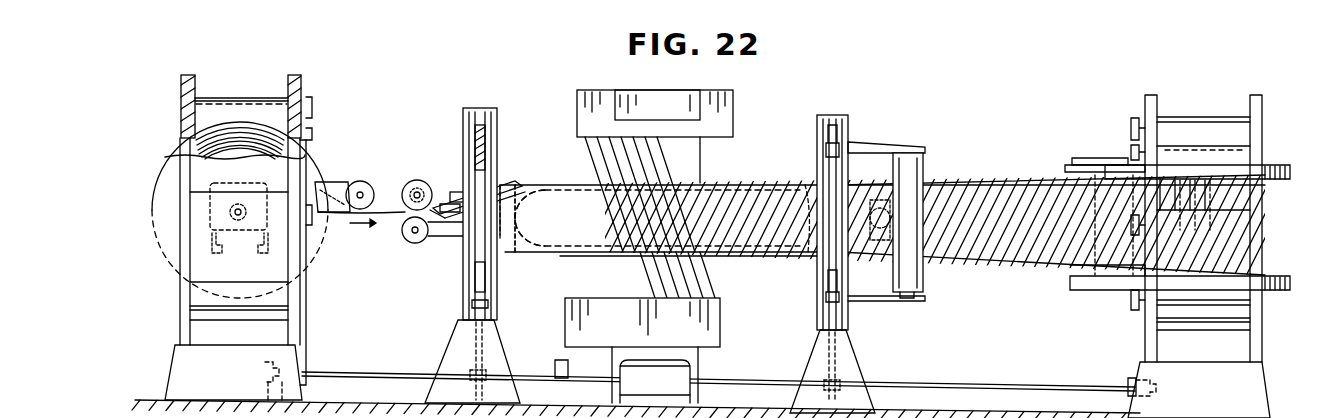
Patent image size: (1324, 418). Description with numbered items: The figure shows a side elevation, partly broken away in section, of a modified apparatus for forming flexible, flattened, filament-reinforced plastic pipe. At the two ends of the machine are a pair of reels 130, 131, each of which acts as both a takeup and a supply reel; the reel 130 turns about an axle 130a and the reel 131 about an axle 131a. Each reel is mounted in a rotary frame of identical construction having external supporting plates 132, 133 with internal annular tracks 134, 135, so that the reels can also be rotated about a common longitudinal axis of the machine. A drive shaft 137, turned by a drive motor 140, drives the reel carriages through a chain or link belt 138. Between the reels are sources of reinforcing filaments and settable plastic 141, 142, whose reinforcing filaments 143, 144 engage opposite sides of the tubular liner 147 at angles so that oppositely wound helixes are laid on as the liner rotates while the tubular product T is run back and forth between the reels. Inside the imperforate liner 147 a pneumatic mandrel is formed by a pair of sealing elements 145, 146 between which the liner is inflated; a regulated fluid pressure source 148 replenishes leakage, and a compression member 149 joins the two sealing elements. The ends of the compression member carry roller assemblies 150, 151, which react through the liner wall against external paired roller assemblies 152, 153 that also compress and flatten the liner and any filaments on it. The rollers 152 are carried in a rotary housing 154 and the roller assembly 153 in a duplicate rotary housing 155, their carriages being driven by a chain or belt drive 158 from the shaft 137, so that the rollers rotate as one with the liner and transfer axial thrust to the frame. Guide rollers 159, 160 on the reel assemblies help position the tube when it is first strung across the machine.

The reel 130 is at (196, 150).
The axle 130a is at (238, 212).
The reel 131 is at (1288, 278).
The axle 131a is at (1210, 165).
The external supporting plate 132 is at (188, 75).
The external supporting plate 133 is at (293, 75).
The internal annular track 134 is at (182, 103).
The internal annular track 135 is at (288, 100).
The drive shaft 137 is at (565, 378).
The chain or link belt 138 is at (306, 300).
The drive motor 140 is at (690, 368).
The source of reinforcing filaments and settable plastic 141 is at (610, 92).
The source of reinforcing filaments and settable plastic 142 is at (565, 330).
The reinforcing filaments 143 is at (600, 160).
The reinforcing filaments 144 is at (715, 280).
The sealing element 145 is at (500, 180).
The sealing element 146 is at (805, 200).
The tubular liner 147 is at (457, 190).
The regulated fluid pressure source 148 is at (578, 250).
The compression member 149 is at (516, 250).
The roller assembly 150 is at (450, 203).
The roller assembly 151 is at (875, 195).
The paired roller assembly 152 is at (398, 238).
The roller assembly 153 is at (927, 165).
The rotary housing 154 is at (468, 103).
The rotary housing 155 is at (850, 110).
The chain or belt drive 158 is at (470, 340).
The guide roller 159 is at (360, 181).
The guide roller 160 is at (1068, 170).
The tubular product T is at (722, 183).